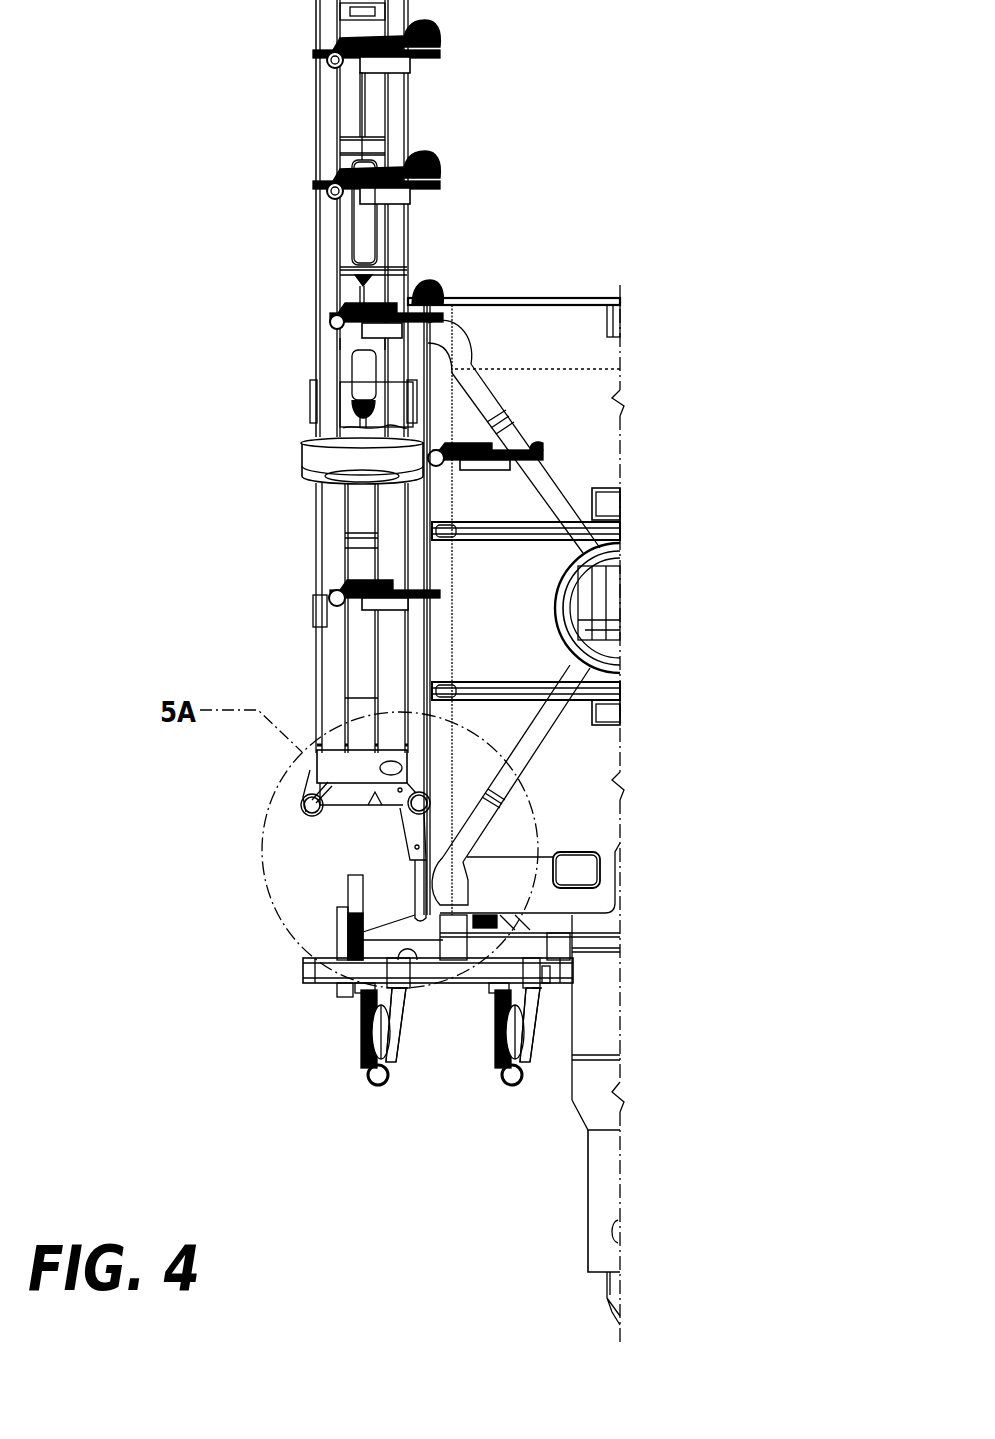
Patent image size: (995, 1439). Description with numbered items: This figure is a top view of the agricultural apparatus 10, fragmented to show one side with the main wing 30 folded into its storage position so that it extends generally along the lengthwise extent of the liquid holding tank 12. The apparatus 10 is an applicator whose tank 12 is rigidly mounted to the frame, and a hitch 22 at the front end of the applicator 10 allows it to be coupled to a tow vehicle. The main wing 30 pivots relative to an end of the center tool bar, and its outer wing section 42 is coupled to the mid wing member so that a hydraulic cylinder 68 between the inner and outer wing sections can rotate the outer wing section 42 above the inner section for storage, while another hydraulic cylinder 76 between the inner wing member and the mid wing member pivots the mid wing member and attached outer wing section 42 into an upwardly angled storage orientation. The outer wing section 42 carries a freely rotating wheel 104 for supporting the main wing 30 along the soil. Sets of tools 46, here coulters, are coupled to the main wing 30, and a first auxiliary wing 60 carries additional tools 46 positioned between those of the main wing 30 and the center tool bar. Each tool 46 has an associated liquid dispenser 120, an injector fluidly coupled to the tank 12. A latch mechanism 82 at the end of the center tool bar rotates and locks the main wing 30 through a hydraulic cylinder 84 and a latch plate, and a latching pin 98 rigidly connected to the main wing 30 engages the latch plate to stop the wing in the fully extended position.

The agricultural apparatus 10 is at (585, 208).
The liquid holding tank 12 is at (586, 385).
The hitch 22 is at (588, 1172).
The main wing 30 is at (288, 287).
The outer wing section 42 is at (396, 245).
The tools 46 is at (441, 50).
The first auxiliary wing 60 is at (310, 970).
The hydraulic cylinder 68 is at (357, 238).
The hydraulic cylinder 76 is at (356, 375).
The latch mechanism 82 is at (374, 892).
The hydraulic cylinder 84 is at (409, 822).
The latching pin 98 is at (311, 806).
The freely rotating wheel 104 is at (305, 457).
The liquid dispenser 120 is at (330, 193).